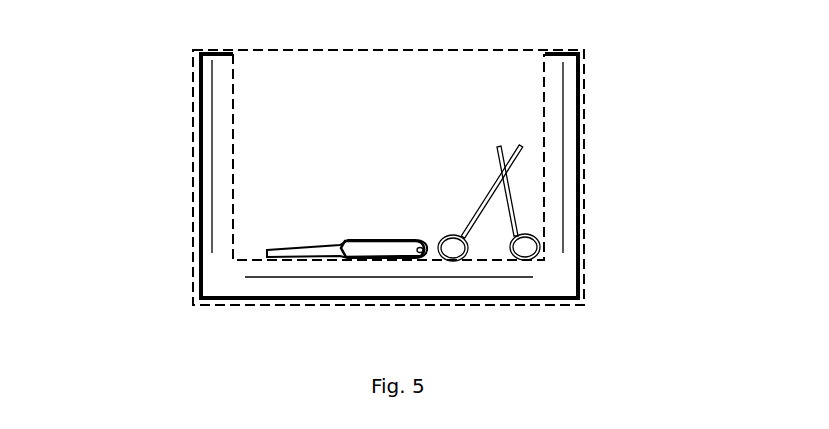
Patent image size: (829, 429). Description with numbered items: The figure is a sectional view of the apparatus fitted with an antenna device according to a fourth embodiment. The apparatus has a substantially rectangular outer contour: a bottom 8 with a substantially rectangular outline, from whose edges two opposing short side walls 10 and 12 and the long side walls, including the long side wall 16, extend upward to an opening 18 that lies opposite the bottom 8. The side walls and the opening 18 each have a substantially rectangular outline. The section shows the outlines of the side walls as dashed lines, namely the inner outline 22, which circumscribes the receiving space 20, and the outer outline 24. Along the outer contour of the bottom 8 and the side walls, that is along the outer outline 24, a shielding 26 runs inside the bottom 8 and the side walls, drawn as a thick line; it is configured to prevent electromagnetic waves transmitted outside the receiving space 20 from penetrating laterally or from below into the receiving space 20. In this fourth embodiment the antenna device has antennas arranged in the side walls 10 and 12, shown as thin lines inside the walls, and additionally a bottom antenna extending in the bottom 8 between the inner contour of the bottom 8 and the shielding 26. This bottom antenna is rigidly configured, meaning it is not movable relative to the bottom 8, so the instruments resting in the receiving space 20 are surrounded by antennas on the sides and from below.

The bottom 8 is at (387, 330).
The short side wall 10 is at (158, 119).
The short side wall 12 is at (618, 200).
The long side wall 16 is at (402, 131).
The opening 18 is at (433, 50).
The receiving space 20 is at (203, 53).
The inner outline 22 is at (233, 218).
The outer outline 24 is at (193, 262).
The shielding 26 is at (194, 102).